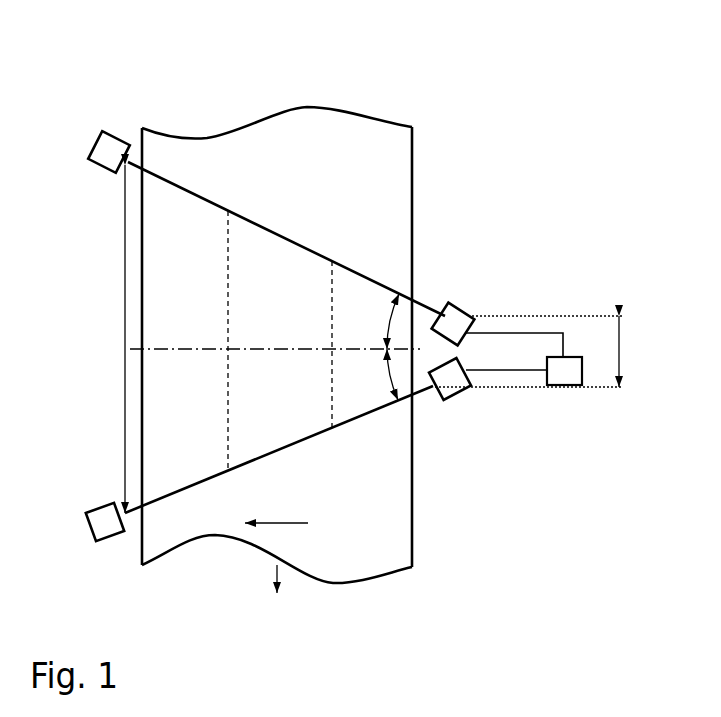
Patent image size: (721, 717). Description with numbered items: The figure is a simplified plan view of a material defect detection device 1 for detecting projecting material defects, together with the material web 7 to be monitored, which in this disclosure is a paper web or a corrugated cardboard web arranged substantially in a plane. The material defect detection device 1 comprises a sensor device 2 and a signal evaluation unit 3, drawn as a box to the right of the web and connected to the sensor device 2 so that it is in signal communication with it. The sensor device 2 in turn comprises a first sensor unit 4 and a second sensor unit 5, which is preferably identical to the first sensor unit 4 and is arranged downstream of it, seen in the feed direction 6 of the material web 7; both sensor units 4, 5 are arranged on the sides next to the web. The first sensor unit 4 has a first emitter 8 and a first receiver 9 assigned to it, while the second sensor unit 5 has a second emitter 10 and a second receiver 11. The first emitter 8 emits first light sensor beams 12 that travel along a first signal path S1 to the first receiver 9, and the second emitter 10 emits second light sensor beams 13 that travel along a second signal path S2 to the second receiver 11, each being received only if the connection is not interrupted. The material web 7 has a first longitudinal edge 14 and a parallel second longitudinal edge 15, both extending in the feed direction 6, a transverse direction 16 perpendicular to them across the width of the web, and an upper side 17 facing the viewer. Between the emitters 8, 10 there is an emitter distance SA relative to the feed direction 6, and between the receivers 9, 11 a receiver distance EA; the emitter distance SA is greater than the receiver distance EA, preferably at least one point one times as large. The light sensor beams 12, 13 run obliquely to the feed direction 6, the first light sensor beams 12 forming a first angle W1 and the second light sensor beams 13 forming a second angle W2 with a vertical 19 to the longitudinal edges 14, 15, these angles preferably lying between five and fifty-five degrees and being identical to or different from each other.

The material defect detection device 1 is at (438, 220).
The sensor device 2 is at (432, 452).
The signal evaluation unit 3 is at (565, 388).
The first sensor unit 4 is at (450, 282).
The second sensor unit 5 is at (438, 410).
The feed direction 6 is at (273, 575).
The material web 7 is at (397, 133).
The first emitter 8 is at (110, 138).
The first receiver 9 is at (455, 310).
The second emitter 10 is at (97, 538).
The second receiver 11 is at (455, 380).
The first light sensor beams 12 is at (167, 174).
The second light sensor beams 13 is at (130, 515).
The first longitudinal edge 14 is at (137, 555).
The second longitudinal edge 15 is at (412, 530).
The transverse direction 16 is at (292, 525).
The upper side 17 is at (320, 114).
The vertical 19 is at (198, 349).
The first signal path S1 is at (232, 213).
The second signal path S2 is at (240, 470).
The emitter distance SA is at (253, 349).
The receiver distance EA is at (546, 351).
The first angle W1 is at (372, 321).
The second angle W2 is at (372, 374).